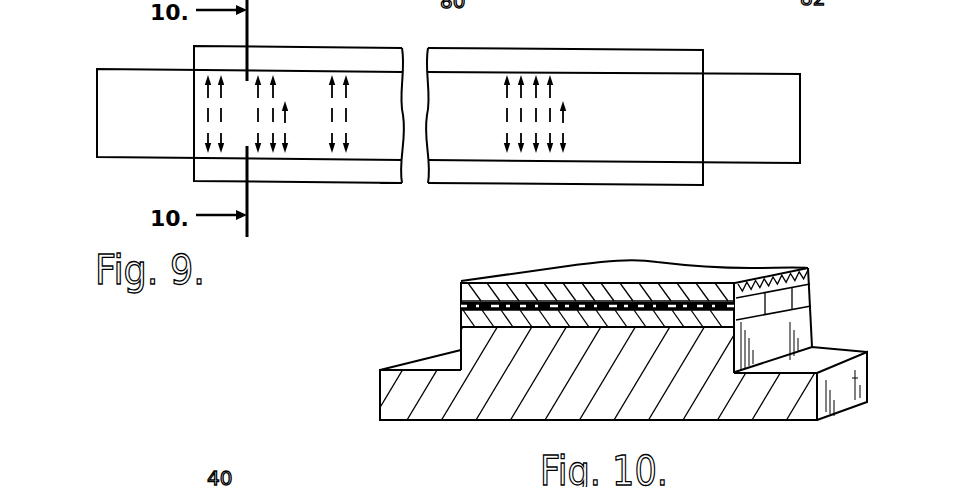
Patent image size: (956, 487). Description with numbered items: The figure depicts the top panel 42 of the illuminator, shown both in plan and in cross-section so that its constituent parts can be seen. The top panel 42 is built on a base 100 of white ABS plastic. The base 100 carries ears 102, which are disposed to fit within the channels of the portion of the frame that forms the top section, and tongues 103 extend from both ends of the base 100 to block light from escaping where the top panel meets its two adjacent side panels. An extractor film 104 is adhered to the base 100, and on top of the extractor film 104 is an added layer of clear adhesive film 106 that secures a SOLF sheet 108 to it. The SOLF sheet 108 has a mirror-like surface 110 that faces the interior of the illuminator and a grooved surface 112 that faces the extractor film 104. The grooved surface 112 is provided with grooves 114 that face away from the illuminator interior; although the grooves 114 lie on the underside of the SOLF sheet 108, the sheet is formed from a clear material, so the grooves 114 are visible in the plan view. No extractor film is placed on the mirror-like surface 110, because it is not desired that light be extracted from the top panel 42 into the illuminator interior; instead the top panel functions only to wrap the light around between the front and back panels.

In FIG. 9, the top panel 42 is at (386, 194).
In FIG. 10, the top panel 42 is at (395, 346).
In FIG. 9, the base 100 is at (710, 64).
In FIG. 10, the base 100 is at (450, 426).
In FIG. 9, the ears 102 is at (343, 55).
In FIG. 10, the ears 102 is at (393, 402).
In FIG. 9, the tongues 103 is at (112, 110).
In FIG. 10, the extractor film 104 is at (461, 318).
In FIG. 10, the clear adhesive film 106 is at (461, 305).
In FIG. 10, the SOLF sheet 108 is at (815, 262).
In FIG. 10, the mirror-like surface 110 is at (597, 272).
In FIG. 10, the grooved surface 112 is at (812, 300).
In FIG. 9, the grooves 114 is at (563, 100).
In FIG. 10, the grooves 114 is at (769, 346).